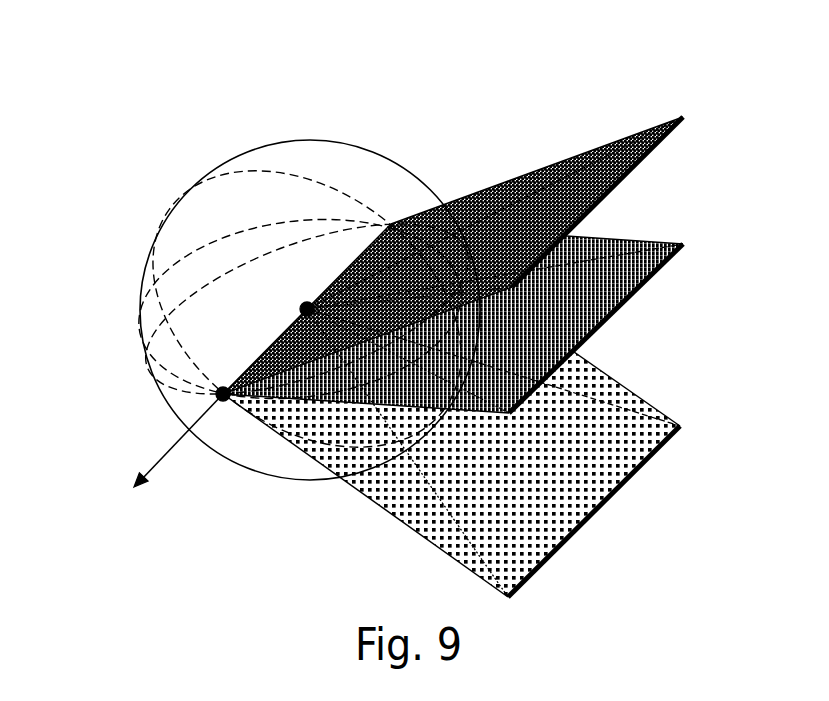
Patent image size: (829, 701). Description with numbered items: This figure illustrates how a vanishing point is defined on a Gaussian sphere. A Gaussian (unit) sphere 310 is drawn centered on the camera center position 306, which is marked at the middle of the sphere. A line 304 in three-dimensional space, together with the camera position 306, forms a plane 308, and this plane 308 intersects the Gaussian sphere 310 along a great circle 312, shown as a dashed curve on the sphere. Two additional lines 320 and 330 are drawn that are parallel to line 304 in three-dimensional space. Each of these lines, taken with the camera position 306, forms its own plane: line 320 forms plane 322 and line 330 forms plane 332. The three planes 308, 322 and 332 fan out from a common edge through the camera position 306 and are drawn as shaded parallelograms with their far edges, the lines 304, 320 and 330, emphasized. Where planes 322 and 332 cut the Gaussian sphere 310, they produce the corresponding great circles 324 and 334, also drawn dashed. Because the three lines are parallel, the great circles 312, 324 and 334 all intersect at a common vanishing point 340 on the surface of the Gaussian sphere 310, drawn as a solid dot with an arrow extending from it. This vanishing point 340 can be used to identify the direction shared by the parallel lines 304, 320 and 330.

The line in three-dimensional space 304 is at (661, 268).
The camera center position 306 is at (307, 309).
The plane 308 is at (613, 238).
The Gaussian sphere 310 is at (288, 140).
The great circle 312 is at (247, 235).
The line 320 is at (685, 118).
The plane 322 is at (523, 176).
The great circle 324 is at (315, 254).
The line 330 is at (632, 480).
The plane 332 is at (393, 517).
The great circle 334 is at (143, 285).
The vanishing point 340 is at (222, 394).